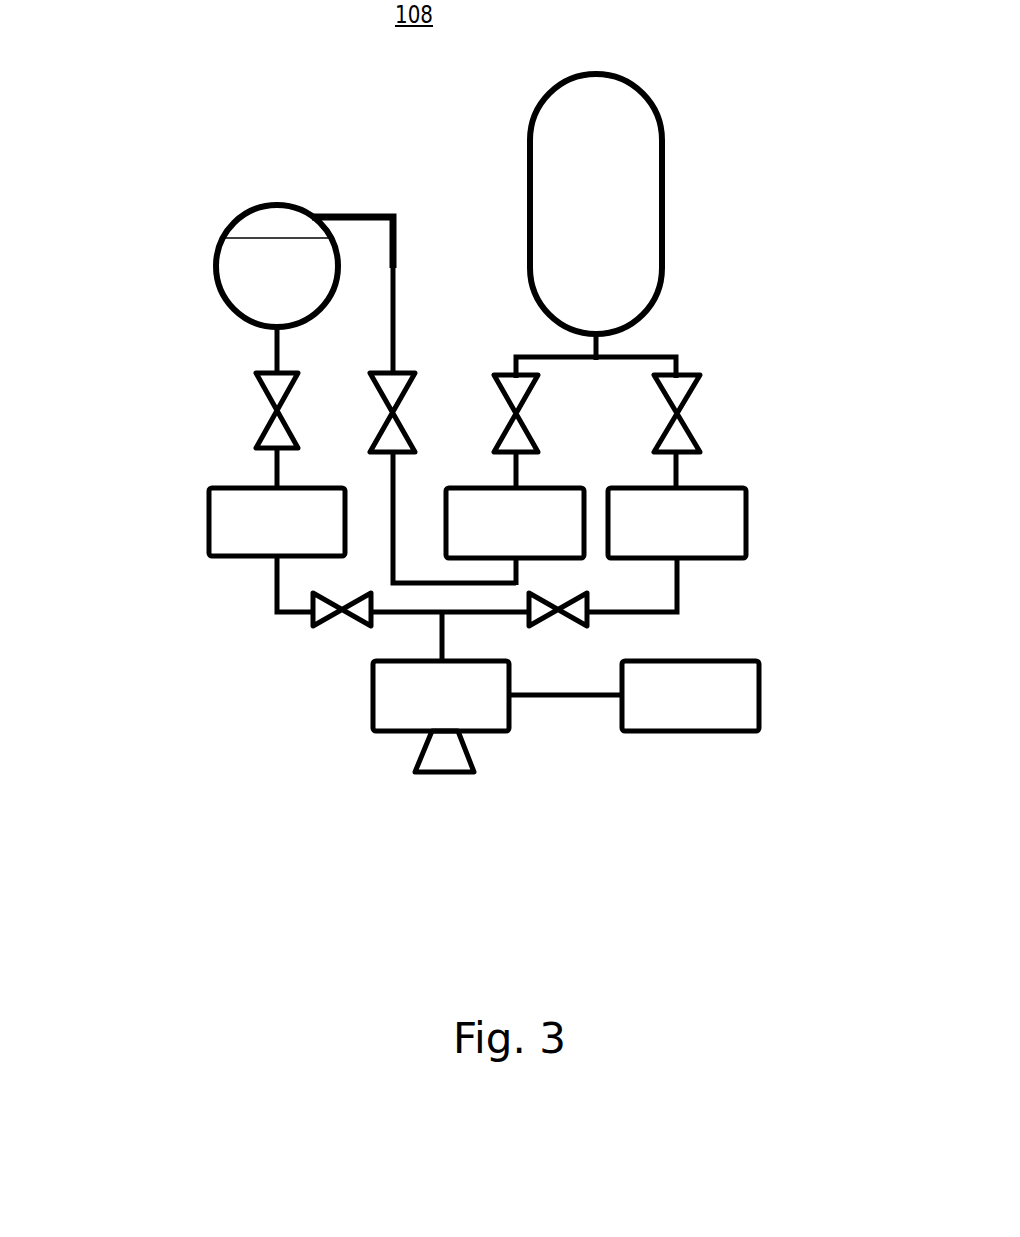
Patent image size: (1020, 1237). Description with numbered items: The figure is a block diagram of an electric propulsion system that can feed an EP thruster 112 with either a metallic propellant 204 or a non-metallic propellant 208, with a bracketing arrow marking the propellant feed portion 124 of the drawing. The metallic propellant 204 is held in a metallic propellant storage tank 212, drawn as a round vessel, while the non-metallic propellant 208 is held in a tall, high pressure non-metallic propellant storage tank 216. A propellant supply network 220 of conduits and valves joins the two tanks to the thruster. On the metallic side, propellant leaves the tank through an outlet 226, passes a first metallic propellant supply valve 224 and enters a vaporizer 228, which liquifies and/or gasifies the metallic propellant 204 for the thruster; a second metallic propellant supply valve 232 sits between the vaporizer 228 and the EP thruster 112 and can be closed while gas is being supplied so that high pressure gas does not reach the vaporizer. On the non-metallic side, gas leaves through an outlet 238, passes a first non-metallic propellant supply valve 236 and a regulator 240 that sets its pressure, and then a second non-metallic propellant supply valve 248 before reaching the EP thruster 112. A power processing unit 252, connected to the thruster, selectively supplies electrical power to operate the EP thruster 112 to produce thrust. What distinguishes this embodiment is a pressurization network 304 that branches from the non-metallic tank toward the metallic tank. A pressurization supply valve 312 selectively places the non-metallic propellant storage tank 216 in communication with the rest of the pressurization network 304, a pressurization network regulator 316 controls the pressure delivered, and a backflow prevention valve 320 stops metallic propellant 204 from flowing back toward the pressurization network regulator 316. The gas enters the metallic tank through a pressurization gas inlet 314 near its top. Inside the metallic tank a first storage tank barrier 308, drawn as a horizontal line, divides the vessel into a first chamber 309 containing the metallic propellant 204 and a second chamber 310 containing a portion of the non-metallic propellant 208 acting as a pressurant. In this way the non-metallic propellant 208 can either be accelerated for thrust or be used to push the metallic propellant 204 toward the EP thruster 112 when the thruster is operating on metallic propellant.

The electric propulsion thruster 112 is at (389, 733).
The propellant feed system 124 is at (148, 474).
The metallic propellant 204 is at (234, 263).
The non-metallic propellant 208 is at (613, 103).
The metallic propellant storage tank 212 is at (226, 226).
The non-metallic propellant storage tank 216 is at (662, 134).
The propellant supply network 220 is at (256, 633).
The first metallic propellant supply valve 224 is at (262, 431).
The outlet 226 is at (262, 338).
The vaporizer 228 is at (207, 503).
The second metallic propellant supply valve 232 is at (328, 627).
The first non-metallic propellant supply valve 236 is at (690, 428).
The outlet 238 is at (604, 342).
The regulator 240 is at (748, 524).
The second non-metallic propellant supply valve 248 is at (545, 626).
The power processing unit 252 is at (689, 720).
The pressurization network 304 is at (458, 256).
The first storage tank barrier 308 is at (277, 238).
The first chamber 309 is at (245, 290).
The second chamber 310 is at (257, 228).
The pressurization supply valve 312 is at (496, 382).
The pressurization gas inlet 314 is at (312, 212).
The pressurization network regulator 316 is at (478, 497).
The backflow prevention valve 320 is at (404, 376).